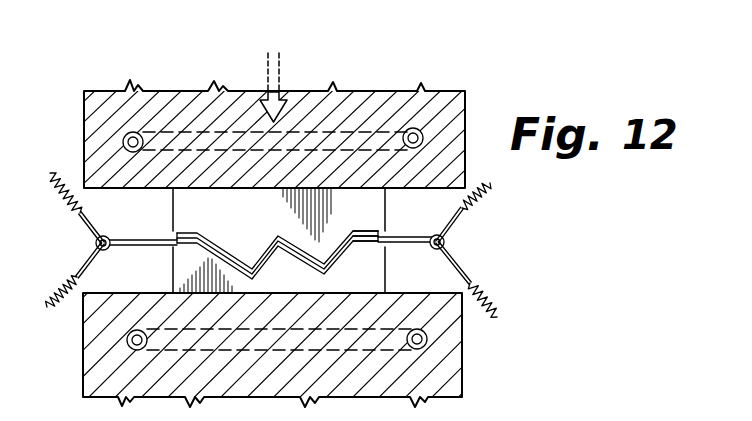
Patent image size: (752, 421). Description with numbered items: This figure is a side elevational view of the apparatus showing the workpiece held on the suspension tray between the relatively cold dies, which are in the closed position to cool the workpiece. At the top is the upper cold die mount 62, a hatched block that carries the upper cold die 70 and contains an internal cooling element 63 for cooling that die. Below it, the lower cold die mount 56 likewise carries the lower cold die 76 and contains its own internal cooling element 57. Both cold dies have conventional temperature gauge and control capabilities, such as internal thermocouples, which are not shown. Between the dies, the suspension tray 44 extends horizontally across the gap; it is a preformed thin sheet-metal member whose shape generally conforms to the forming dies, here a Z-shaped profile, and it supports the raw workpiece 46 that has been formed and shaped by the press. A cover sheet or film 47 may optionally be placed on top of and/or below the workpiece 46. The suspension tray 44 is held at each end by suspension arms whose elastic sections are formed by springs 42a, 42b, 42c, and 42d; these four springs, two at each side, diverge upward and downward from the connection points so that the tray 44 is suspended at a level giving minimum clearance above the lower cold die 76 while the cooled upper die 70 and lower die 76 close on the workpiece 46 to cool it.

The upper cold die mount 62 is at (457, 105).
The internal cooling element 63 is at (422, 142).
The lower cold die mount 56 is at (90, 377).
The internal cooling element 57 is at (427, 341).
The upper cold die 70 is at (377, 200).
The lower cold die 76 is at (180, 271).
The raw workpiece 46 is at (177, 233).
The cover sheet or film 47 is at (383, 234).
The suspension tray 44 is at (408, 246).
The spring 42a is at (57, 201).
The spring 42b is at (482, 204).
The spring 42c is at (478, 291).
The spring 42d is at (70, 274).